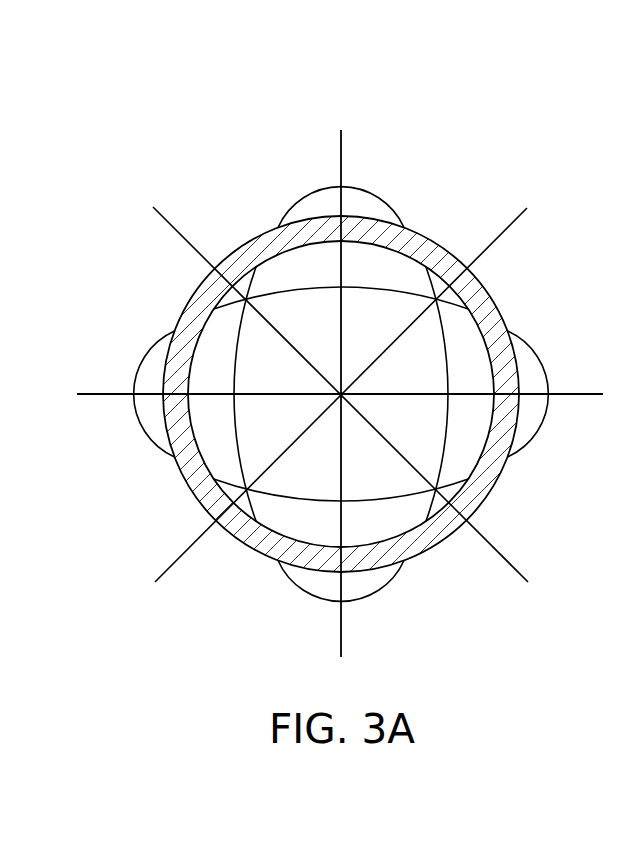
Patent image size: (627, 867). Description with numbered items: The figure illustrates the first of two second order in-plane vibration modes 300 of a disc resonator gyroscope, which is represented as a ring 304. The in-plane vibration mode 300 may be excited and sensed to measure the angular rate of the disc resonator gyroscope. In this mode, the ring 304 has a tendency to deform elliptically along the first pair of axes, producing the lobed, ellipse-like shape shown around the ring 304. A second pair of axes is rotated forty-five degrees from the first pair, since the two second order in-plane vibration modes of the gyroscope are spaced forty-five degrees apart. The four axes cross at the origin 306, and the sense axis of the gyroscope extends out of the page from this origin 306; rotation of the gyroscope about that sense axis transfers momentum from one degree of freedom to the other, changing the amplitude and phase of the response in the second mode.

The second order in-plane vibration mode 300 is at (313, 397).
The ring 304 is at (498, 302).
The origin 306 is at (345, 392).